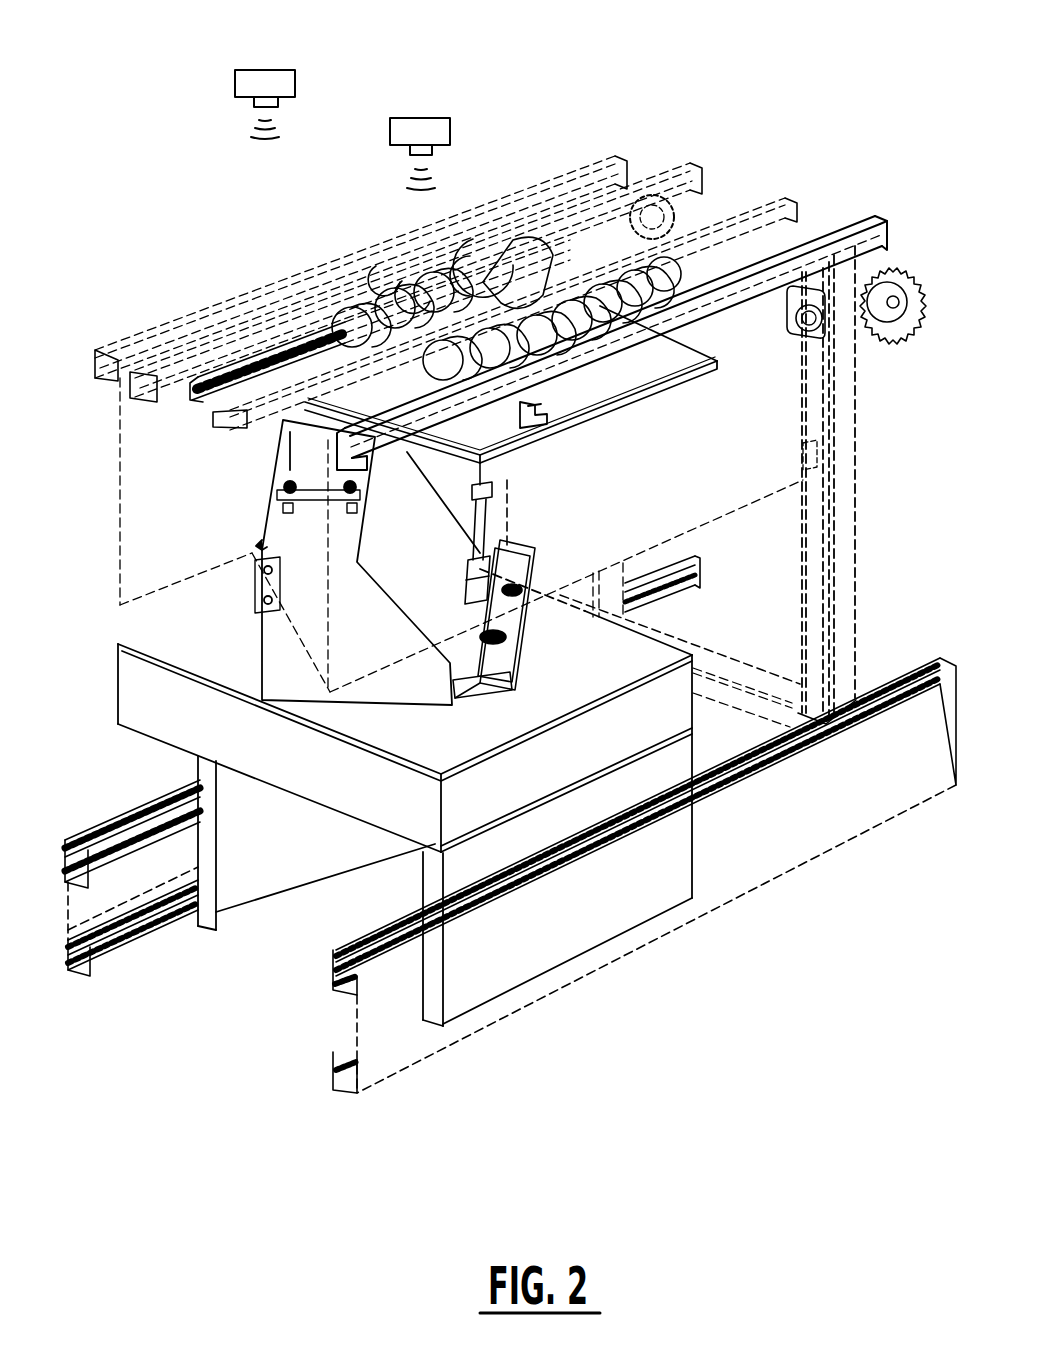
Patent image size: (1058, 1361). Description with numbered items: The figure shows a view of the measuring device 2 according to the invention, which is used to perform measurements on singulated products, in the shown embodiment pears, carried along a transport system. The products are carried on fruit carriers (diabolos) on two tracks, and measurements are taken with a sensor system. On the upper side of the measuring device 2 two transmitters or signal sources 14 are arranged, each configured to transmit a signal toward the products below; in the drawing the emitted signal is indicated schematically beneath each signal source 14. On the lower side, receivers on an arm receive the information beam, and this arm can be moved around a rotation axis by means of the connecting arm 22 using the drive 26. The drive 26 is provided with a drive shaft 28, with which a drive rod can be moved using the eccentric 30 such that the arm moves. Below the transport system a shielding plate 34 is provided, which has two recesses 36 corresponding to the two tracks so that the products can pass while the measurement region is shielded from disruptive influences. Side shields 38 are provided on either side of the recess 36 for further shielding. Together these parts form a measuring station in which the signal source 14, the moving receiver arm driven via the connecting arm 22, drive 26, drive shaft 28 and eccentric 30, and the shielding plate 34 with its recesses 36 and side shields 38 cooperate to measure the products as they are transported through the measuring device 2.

The measuring device 2 is at (172, 163).
The transmitter or signal source 14 is at (250, 76).
The connecting arm 22 is at (493, 560).
The drive 26 is at (125, 320).
The drive shaft 28 is at (330, 432).
The eccentric 30 is at (235, 446).
The shielding plate 34 is at (663, 367).
The recess 36 is at (547, 412).
The side shield 38 is at (513, 417).